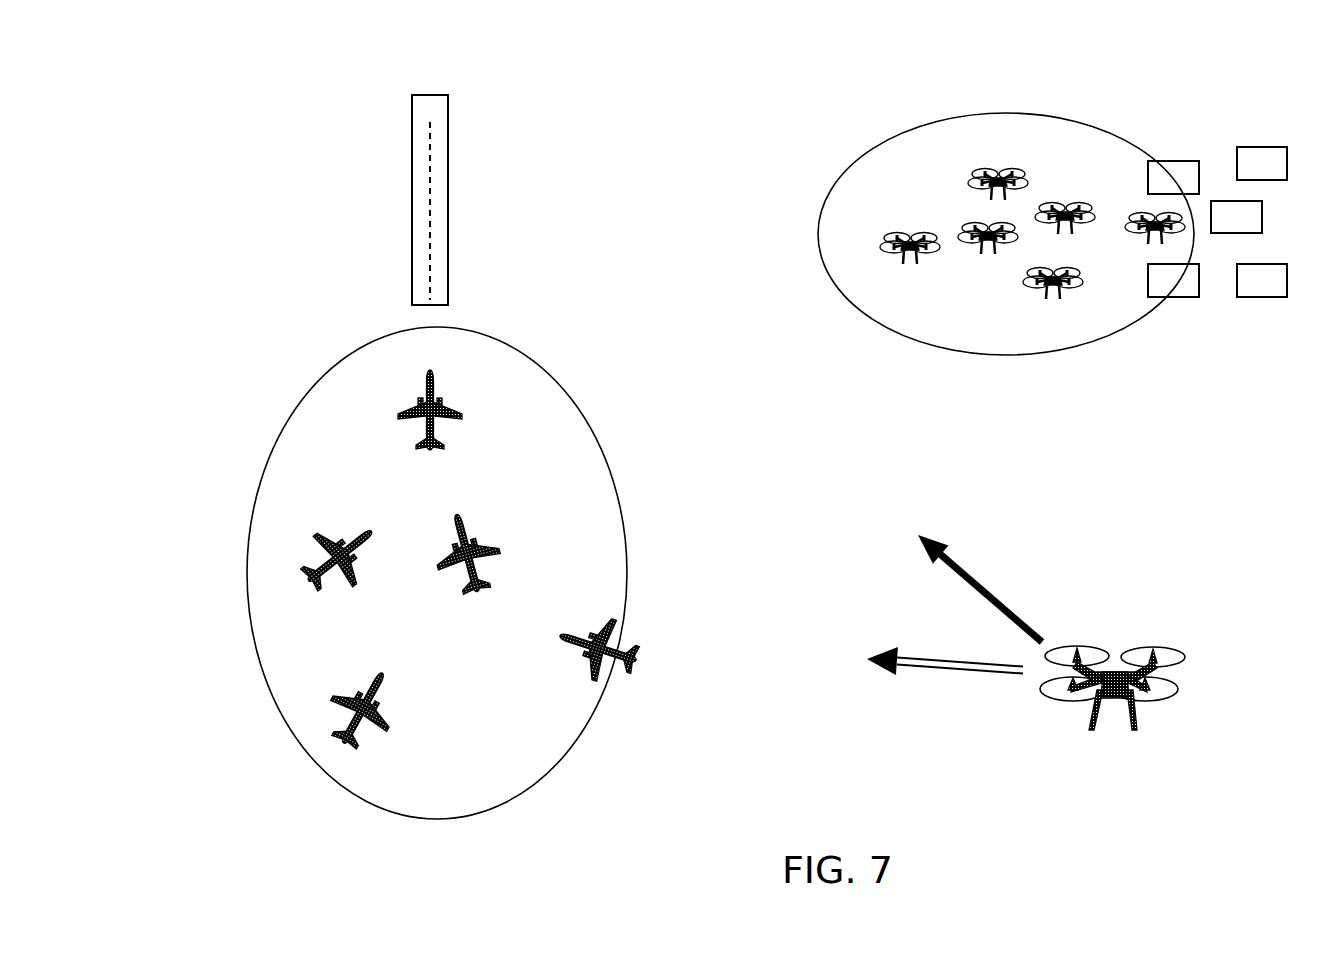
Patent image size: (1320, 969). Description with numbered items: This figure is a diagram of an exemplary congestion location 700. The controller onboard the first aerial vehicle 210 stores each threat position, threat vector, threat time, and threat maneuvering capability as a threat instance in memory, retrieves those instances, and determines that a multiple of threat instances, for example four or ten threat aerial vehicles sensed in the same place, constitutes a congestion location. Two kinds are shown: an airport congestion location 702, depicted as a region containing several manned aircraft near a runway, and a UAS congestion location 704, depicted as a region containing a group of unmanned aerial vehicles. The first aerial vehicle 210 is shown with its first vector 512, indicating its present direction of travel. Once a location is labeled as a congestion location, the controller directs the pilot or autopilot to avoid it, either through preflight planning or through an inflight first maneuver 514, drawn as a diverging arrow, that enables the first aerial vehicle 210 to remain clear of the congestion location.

The congestion location 700 is at (160, 120).
The airport congestion location 702 is at (595, 442).
The UAS congestion location 704 is at (1008, 355).
The first aerial vehicle 210 is at (1185, 657).
The first vector 512 is at (936, 657).
The first maneuver 514 is at (970, 570).